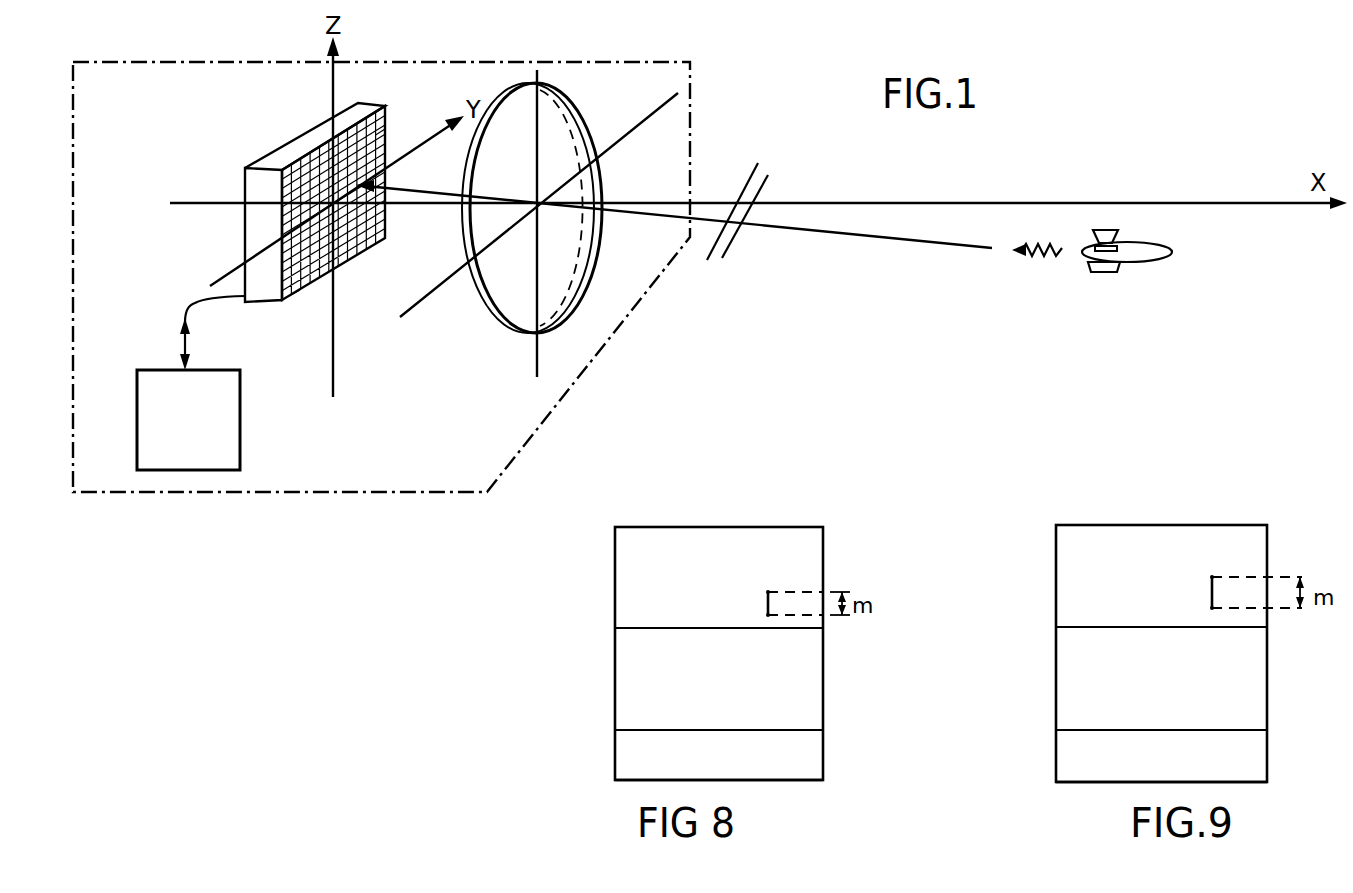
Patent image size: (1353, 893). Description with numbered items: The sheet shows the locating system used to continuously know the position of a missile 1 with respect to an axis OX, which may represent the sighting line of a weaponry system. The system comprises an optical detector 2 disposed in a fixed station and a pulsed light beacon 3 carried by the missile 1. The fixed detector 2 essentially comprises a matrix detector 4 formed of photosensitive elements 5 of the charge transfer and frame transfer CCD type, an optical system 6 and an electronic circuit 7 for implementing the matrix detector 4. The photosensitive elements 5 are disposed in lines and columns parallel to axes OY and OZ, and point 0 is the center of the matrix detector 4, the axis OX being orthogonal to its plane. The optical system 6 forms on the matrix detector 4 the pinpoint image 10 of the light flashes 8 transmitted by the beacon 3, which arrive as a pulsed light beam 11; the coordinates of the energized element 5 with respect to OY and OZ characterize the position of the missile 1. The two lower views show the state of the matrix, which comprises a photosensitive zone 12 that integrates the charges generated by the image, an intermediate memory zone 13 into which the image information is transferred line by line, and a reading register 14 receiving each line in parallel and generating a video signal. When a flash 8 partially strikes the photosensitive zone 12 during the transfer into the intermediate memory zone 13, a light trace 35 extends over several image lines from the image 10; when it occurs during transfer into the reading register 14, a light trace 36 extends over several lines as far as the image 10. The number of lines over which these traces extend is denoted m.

In FIG. 1, the missile 1 is at (1172, 255).
In FIG. 1, the optical detector 2 is at (690, 72).
In FIG. 1, the pulsed light beacon 3 is at (1105, 231).
In FIG. 1, the matrix detector 4 is at (355, 104).
In FIG. 1, the photosensitive element 5 is at (305, 293).
In FIG. 1, the optical system 6 is at (557, 128).
In FIG. 1, the electronic circuit 7 is at (148, 413).
In FIG. 1, the light flash 8 is at (1045, 263).
In FIG. 1, the center of the matrix detector 0 is at (332, 200).
In FIG. 1, the pinpoint image 10 is at (385, 136).
In FIG. 8, the pinpoint image 10 is at (768, 590).
In FIG. 9, the pinpoint image 10 is at (1210, 608).
In FIG. 1, the pulsed light beam 11 is at (852, 236).
In FIG. 8, the photosensitive zone 12 is at (683, 545).
In FIG. 9, the photosensitive zone 12 is at (1056, 572).
In FIG. 8, the intermediate memory zone 13 is at (632, 678).
In FIG. 9, the intermediate memory zone 13 is at (1056, 678).
In FIG. 8, the reading register 14 is at (632, 756).
In FIG. 9, the reading register 14 is at (1056, 757).
In FIG. 8, the light trace 35 is at (765, 601).
In FIG. 9, the light trace 36 is at (1210, 590).